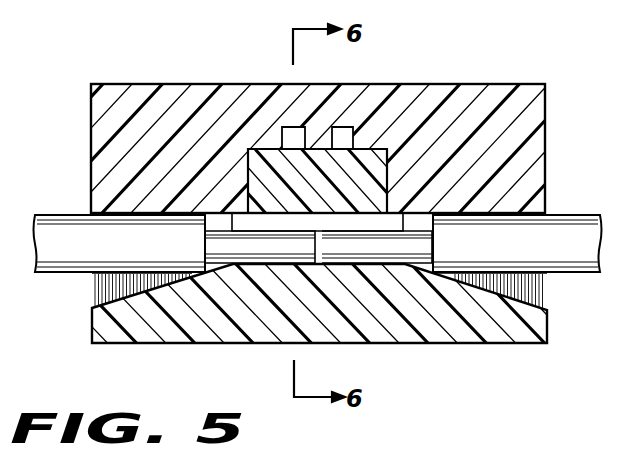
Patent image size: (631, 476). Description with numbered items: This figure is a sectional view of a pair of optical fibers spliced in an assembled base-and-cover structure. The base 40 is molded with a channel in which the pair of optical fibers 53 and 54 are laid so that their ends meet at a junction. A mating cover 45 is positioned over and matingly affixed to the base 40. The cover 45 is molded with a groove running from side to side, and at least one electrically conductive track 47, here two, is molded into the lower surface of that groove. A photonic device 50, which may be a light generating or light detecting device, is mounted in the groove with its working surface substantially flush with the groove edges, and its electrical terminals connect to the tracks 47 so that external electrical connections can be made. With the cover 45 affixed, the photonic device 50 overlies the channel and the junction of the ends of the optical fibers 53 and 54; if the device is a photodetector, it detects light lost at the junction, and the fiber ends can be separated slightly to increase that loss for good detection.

The base 40 is at (464, 330).
The cover 45 is at (175, 95).
The electrically conductive track 47 is at (333, 130).
The photonic device 50 is at (363, 178).
The optical fiber 53 is at (73, 229).
The optical fiber 54 is at (563, 229).